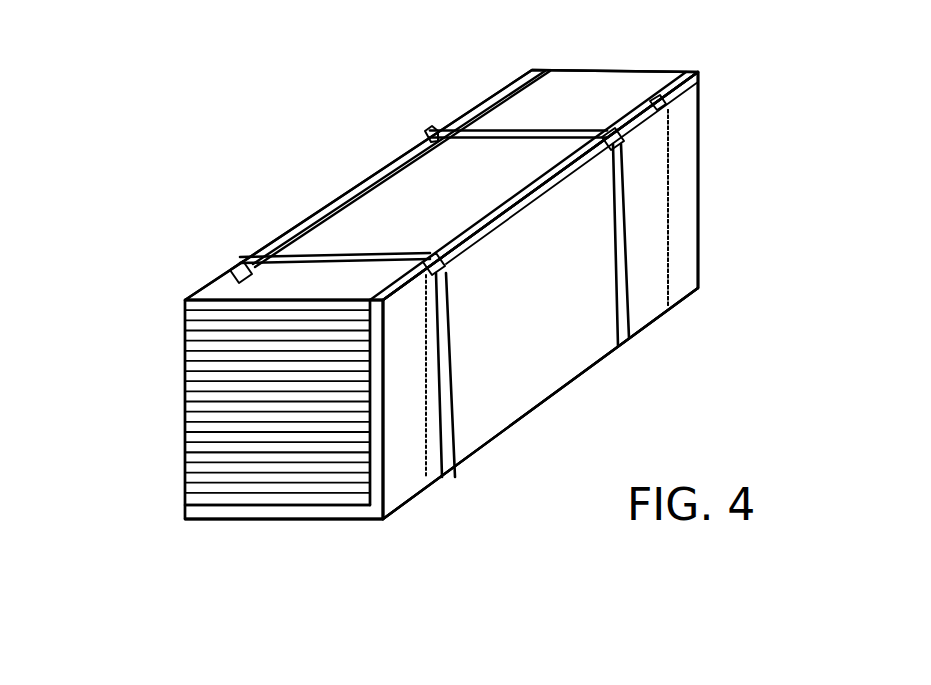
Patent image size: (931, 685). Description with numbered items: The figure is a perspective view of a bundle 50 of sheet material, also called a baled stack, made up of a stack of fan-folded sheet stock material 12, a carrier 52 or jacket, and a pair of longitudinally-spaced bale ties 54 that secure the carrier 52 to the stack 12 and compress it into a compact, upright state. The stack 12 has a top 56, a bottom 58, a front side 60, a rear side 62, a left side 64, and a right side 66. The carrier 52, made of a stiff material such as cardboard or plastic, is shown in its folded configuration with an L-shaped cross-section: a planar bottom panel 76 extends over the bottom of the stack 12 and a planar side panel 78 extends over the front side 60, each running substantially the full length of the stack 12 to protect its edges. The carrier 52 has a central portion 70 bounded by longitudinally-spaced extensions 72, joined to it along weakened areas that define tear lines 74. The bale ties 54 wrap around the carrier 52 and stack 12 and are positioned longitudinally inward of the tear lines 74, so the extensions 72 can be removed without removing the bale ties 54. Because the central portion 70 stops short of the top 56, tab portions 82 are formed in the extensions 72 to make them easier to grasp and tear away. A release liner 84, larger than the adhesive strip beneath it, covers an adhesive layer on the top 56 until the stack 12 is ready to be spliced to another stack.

The bundle 50 is at (296, 128).
The stack of fan-folded sheet stock material 12 is at (198, 367).
The carrier 52 is at (580, 350).
The bale ties 54 is at (317, 260).
The top 56 is at (590, 93).
The bottom 58 is at (240, 518).
The front side 60 is at (386, 490).
The rear side 62 is at (172, 418).
The left side 64 is at (230, 462).
The right side 66 is at (718, 121).
The central portion 70 is at (514, 390).
The longitudinally-spaced extensions 72 is at (413, 476).
The tear line 74 is at (670, 257).
The bottom panel 76 is at (686, 188).
The side panel 78 is at (294, 513).
The tab portions 82 is at (402, 298).
The release liner 84 is at (380, 185).